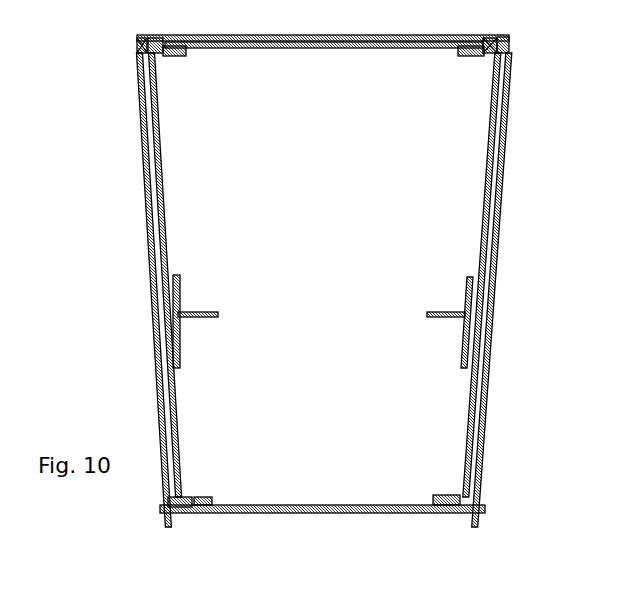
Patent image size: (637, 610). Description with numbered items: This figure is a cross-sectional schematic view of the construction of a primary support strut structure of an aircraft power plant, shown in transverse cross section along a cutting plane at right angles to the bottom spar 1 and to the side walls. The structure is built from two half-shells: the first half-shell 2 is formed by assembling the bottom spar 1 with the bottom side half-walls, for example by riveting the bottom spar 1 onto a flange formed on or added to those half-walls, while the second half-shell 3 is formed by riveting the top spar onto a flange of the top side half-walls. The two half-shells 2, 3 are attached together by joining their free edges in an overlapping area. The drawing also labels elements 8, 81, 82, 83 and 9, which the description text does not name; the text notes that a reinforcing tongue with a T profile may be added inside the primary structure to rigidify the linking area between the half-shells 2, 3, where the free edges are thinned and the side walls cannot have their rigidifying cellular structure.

The bottom spar 1 is at (398, 513).
The first half-shell 2 is at (488, 410).
The second half-shell 3 is at (503, 170).
The frame profile 8 is at (145, 180).
The inner profile wall 81 is at (158, 417).
The corner connector 82 is at (143, 92).
The connecting block 83 is at (182, 55).
The bracket 9 is at (181, 282).